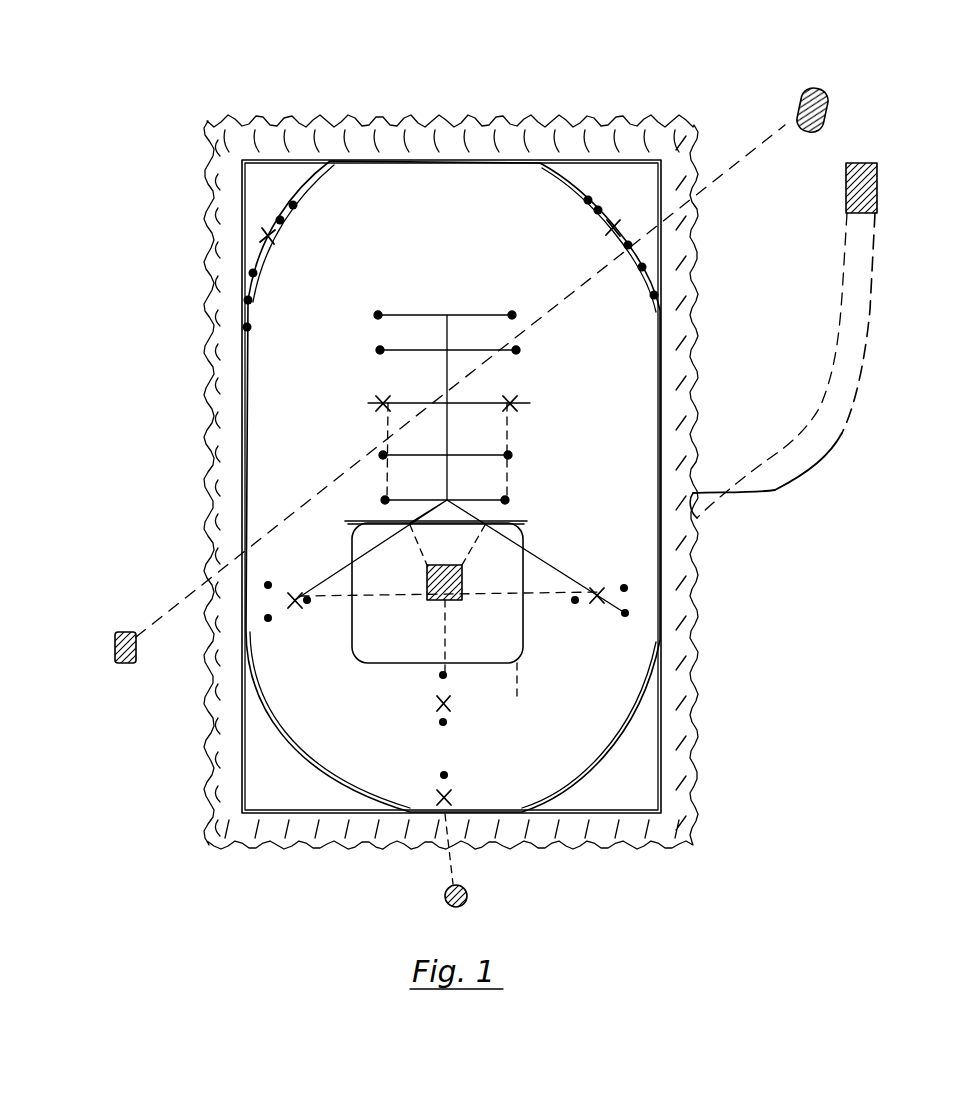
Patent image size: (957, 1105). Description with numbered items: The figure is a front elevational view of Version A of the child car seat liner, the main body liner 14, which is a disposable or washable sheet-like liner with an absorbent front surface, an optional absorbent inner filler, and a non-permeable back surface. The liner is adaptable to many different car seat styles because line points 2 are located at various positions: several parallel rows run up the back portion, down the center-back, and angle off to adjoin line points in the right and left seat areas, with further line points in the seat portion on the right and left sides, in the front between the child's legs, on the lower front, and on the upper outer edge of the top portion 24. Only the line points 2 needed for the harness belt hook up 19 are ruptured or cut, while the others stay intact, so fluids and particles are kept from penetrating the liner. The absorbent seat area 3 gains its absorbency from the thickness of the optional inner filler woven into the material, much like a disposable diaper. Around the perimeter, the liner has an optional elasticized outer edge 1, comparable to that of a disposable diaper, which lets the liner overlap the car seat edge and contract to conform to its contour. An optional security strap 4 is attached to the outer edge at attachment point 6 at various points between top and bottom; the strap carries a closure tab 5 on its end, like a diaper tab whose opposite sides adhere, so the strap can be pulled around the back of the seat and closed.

The elasticized outer edge 1 is at (608, 128).
The line points 2 is at (443, 797).
The absorbent seat area 3 is at (498, 632).
The security strap 4 is at (765, 491).
The closure tab 5 is at (866, 163).
The attachment of security strap to outer edge 6 is at (695, 510).
The main body liner (Version A liner) 14 is at (500, 65).
The harness belt hook up 19 is at (466, 900).
The top portion (vehicle shoulder belt) 24 is at (838, 88).